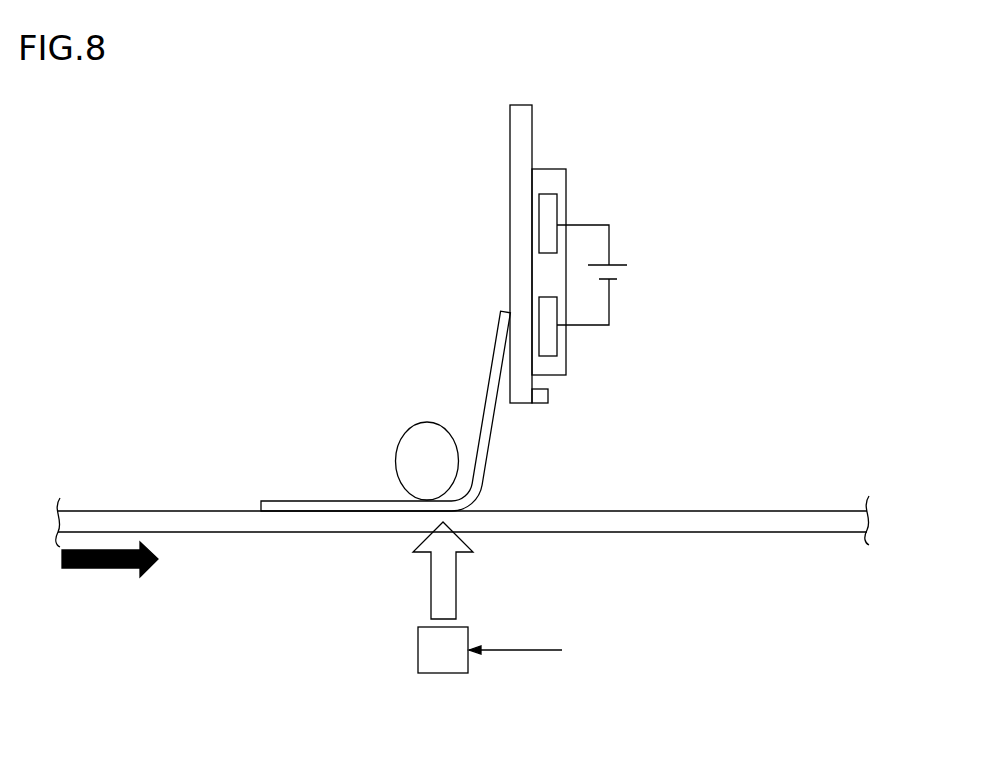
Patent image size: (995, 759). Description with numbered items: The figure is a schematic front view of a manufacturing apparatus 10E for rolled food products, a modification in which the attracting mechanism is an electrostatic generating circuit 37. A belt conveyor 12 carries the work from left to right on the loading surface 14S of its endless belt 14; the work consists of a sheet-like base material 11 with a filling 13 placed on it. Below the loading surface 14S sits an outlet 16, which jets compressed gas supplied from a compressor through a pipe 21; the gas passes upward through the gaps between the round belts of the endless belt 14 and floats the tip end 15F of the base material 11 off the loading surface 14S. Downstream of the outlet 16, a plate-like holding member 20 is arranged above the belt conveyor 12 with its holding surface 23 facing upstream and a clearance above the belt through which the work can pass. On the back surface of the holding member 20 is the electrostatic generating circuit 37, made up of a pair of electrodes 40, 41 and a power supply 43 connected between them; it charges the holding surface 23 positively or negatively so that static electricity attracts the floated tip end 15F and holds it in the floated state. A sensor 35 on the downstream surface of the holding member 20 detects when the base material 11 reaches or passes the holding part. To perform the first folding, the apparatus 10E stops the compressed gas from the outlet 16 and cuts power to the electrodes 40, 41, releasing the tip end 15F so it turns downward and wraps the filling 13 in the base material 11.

The manufacturing apparatus 10E is at (742, 173).
The base material 11 is at (288, 499).
The belt conveyor 12 is at (816, 491).
The filling 13 is at (407, 452).
The endless belt 14 is at (725, 507).
The loading surface 14S is at (738, 511).
The tip end 15F is at (495, 346).
The outlet 16 is at (418, 655).
The holding member 20 is at (533, 154).
The pipe 21 is at (526, 650).
The holding surface 23 is at (510, 185).
The sensor 35 is at (537, 404).
The electrostatic generating circuit 37 is at (643, 268).
The electrode 40 is at (557, 343).
The electrode 41 is at (557, 208).
The power supply 43 is at (622, 273).